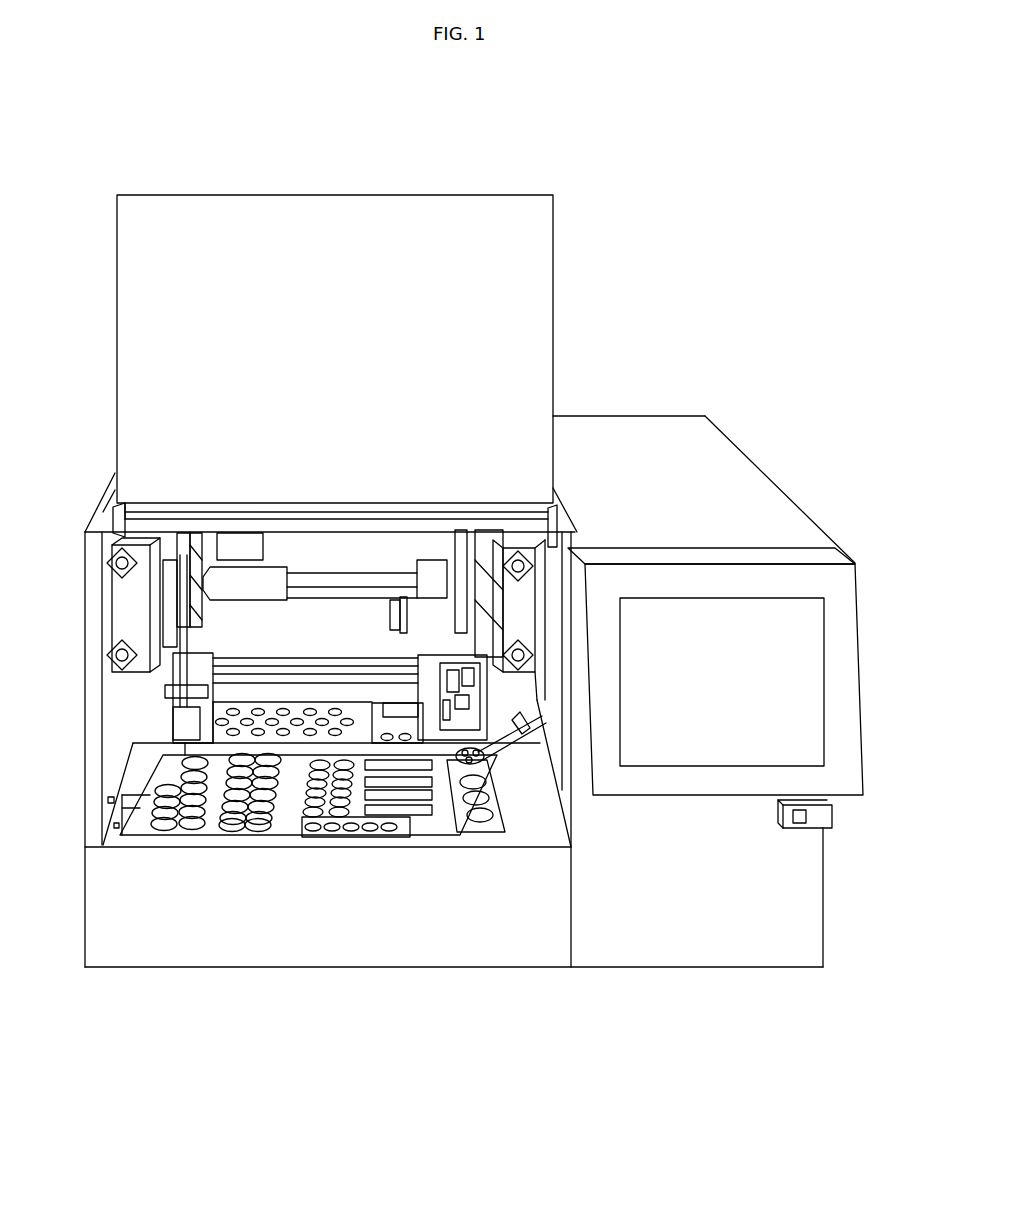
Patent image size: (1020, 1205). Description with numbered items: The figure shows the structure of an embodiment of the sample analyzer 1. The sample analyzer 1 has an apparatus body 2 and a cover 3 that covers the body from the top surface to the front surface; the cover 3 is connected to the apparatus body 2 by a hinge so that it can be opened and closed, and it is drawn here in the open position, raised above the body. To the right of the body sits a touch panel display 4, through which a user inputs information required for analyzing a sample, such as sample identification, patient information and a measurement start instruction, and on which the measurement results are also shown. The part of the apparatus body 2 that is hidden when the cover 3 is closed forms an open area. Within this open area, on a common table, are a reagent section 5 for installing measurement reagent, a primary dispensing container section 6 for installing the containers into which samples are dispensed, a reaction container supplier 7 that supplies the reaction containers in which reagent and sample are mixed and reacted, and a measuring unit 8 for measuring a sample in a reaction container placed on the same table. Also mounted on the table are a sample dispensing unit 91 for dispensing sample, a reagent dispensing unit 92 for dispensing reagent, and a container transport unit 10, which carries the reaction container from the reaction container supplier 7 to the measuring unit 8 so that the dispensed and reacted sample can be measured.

The sample analyzer 1 is at (695, 335).
The apparatus body 2 is at (820, 905).
The cover 3 is at (258, 195).
The touch panel display 4 is at (803, 638).
The reagent section 5 is at (158, 827).
The primary dispensing container section 6 is at (418, 810).
The reaction container supplier 7 is at (487, 760).
The measuring unit 8 is at (313, 740).
The container transport unit 10 is at (440, 673).
The sample dispensing unit 91 is at (467, 560).
The reagent dispensing unit 92 is at (182, 548).